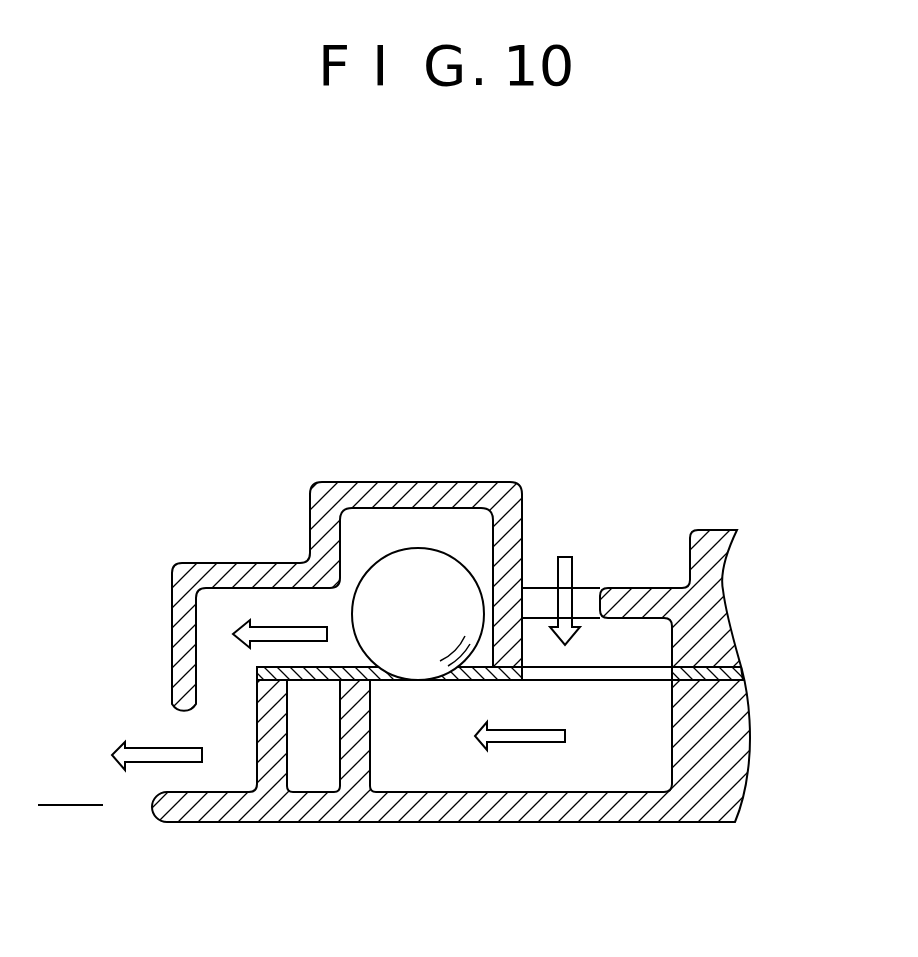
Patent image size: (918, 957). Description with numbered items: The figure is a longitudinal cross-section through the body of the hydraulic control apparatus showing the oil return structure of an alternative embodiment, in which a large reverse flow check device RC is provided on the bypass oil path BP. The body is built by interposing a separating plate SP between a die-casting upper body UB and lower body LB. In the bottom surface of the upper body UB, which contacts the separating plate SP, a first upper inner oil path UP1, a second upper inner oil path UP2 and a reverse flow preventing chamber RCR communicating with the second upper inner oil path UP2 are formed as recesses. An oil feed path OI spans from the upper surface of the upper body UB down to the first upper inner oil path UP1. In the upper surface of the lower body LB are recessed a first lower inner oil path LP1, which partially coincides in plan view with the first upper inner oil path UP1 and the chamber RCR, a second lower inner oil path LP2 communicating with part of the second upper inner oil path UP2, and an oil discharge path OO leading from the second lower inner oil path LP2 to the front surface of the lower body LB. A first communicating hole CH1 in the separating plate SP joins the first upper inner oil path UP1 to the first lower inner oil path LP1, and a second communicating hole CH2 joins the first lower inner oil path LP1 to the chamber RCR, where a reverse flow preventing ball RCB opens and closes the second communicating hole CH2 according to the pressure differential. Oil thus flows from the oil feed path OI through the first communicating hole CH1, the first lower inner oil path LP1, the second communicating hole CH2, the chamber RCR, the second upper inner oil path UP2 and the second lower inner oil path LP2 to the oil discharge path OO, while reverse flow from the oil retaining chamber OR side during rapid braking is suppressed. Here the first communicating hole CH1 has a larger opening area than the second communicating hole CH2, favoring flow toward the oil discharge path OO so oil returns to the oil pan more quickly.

The lower body LB is at (442, 812).
The upper body UB is at (717, 532).
The bypass oil path BP is at (594, 580).
The reverse flow preventing chamber RCR is at (462, 523).
The reverse flow check device RC is at (406, 536).
The reverse flow preventing ball RCB is at (368, 588).
The separating plate SP is at (712, 677).
The first upper inner oil path UP1 is at (655, 633).
The second upper inner oil path UP2 is at (225, 607).
The first lower inner oil path LP1 is at (540, 765).
The second lower inner oil path LP2 is at (225, 762).
The first communicating hole CH1 is at (608, 680).
The second communicating hole CH2 is at (397, 683).
The oil feed path OI is at (535, 595).
The oil discharge path OO is at (187, 725).
The oil retaining chamber OR is at (70, 783).